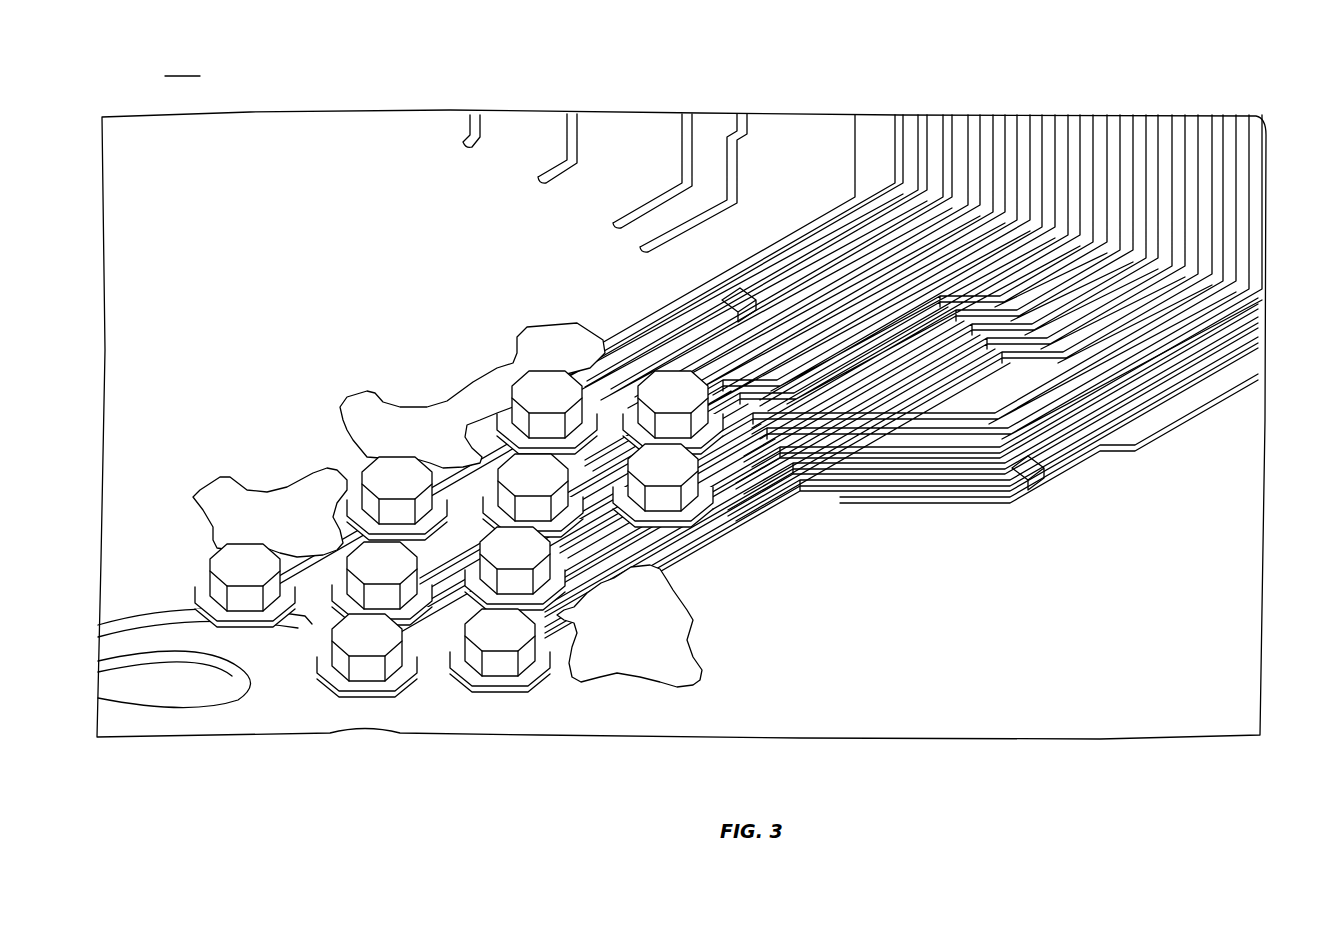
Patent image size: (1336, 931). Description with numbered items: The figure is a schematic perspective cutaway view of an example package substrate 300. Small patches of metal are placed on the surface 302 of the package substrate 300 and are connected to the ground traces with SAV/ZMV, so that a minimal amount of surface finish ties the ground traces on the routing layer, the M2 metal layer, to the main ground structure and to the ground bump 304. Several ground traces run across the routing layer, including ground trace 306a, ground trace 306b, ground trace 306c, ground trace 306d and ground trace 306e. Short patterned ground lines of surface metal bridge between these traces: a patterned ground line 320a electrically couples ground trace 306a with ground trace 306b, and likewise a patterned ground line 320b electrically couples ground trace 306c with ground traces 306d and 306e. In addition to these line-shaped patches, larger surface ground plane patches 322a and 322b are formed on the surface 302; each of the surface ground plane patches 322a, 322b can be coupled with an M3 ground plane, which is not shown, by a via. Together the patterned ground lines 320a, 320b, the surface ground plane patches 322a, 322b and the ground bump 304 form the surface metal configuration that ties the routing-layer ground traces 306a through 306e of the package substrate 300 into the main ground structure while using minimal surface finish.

The package substrate 300 is at (182, 66).
The surface 302 is at (1182, 706).
The ground bump 304 is at (536, 684).
The ground trace 306a is at (895, 114).
The ground trace 306b is at (1056, 114).
The ground trace 306c is at (1265, 375).
The ground trace 306d is at (1270, 310).
The ground trace 306e is at (1210, 114).
The patterned ground line 320a is at (724, 297).
The patterned ground line 320b is at (1040, 474).
The surface ground plane patch 322a is at (699, 653).
The surface ground plane patch 322b is at (382, 390).